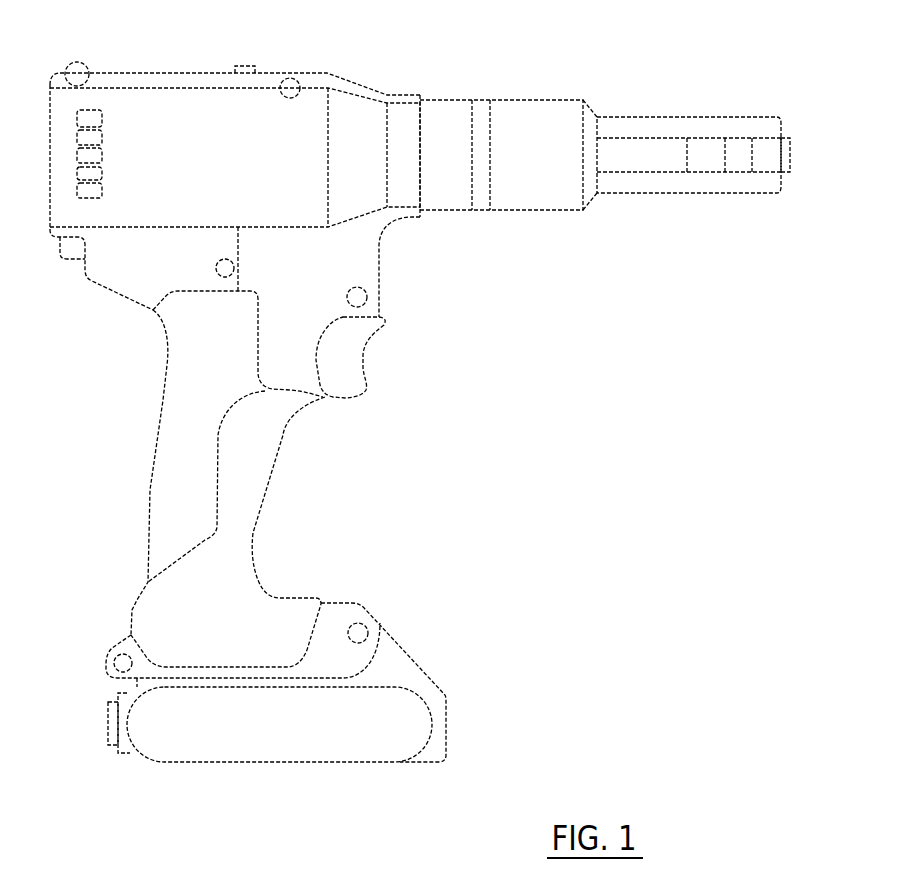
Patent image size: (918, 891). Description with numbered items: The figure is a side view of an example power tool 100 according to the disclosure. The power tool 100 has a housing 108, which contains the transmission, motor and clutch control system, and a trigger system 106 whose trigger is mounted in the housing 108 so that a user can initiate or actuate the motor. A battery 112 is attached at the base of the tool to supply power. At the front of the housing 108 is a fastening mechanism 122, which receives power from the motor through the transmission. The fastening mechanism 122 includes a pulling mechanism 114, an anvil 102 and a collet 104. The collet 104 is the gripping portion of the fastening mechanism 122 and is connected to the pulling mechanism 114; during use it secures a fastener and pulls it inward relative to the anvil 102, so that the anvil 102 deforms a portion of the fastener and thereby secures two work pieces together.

The power tool 100 is at (690, 93).
The anvil 102 is at (728, 183).
The collet 104 is at (792, 167).
The trigger system 106 is at (363, 368).
The housing 108 is at (313, 72).
The battery 112 is at (446, 725).
The pulling mechanism 114 is at (545, 100).
The fastening mechanism 122 is at (758, 100).